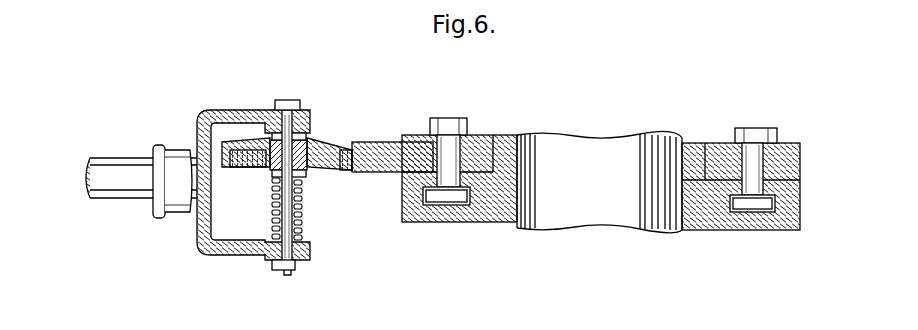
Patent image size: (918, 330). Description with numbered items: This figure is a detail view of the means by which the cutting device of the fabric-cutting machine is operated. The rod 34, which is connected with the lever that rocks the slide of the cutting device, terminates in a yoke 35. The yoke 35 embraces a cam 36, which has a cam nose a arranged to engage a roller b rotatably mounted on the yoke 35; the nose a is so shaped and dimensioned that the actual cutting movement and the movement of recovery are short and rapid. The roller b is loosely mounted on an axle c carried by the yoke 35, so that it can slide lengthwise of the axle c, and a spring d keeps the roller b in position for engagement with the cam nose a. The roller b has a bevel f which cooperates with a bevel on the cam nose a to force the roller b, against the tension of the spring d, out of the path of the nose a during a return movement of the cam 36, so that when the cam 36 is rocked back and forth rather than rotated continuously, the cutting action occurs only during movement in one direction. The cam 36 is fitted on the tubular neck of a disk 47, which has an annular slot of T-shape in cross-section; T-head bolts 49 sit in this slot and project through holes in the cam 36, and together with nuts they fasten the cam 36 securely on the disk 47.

The rod 34 is at (122, 192).
The yoke 35 is at (238, 112).
The cam 36 is at (486, 135).
The disk 47 is at (478, 215).
The T-head bolts 49 is at (752, 128).
The cam nose a is at (380, 142).
The roller b is at (352, 172).
The axle c is at (278, 212).
The spring d is at (305, 190).
The bevel f is at (336, 140).